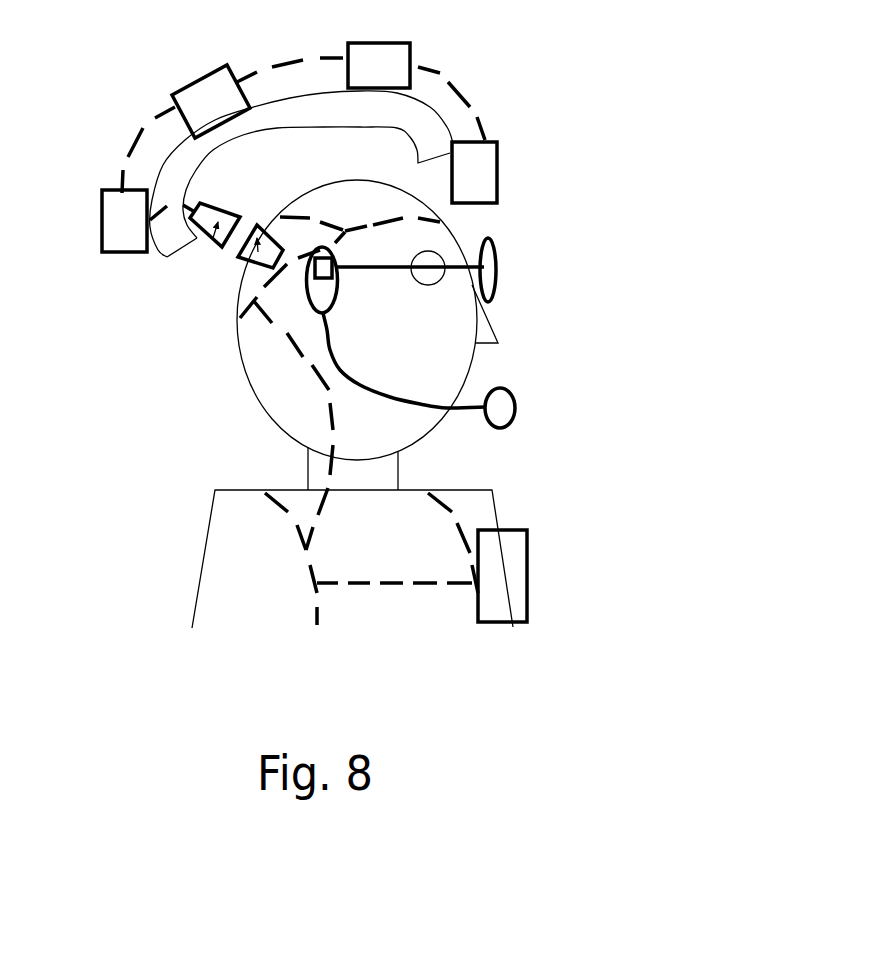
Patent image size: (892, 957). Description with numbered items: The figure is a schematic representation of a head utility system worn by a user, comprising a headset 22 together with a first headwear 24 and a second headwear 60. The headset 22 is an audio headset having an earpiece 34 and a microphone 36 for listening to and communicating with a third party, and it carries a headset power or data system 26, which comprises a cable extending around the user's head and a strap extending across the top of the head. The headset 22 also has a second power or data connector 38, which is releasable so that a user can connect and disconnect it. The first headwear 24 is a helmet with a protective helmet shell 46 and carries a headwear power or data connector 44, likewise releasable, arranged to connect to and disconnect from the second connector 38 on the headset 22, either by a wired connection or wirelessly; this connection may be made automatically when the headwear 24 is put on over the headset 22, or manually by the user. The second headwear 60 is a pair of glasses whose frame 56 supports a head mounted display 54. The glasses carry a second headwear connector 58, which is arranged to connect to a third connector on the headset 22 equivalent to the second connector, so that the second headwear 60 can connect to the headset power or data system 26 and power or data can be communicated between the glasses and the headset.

The headset 22 is at (187, 337).
The headwear 24 is at (493, 62).
The headset power or data system 26 is at (387, 220).
The earpiece 34 is at (312, 305).
The microphone 36 is at (515, 417).
The second power or data connector 38 is at (258, 225).
The headwear power or data connector 44 is at (220, 242).
The protective helmet shell 46 is at (301, 174).
The head mounted display 54 is at (493, 240).
The frame 56 is at (383, 272).
The second headwear connector 58 is at (330, 283).
The second headwear 60 is at (494, 269).